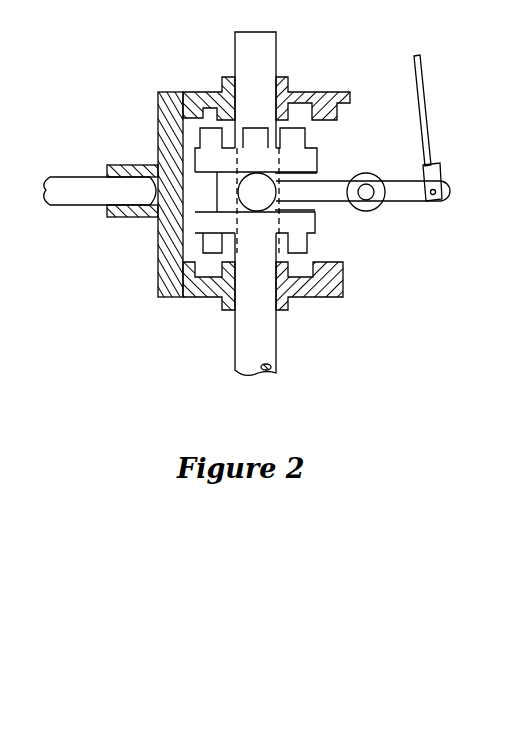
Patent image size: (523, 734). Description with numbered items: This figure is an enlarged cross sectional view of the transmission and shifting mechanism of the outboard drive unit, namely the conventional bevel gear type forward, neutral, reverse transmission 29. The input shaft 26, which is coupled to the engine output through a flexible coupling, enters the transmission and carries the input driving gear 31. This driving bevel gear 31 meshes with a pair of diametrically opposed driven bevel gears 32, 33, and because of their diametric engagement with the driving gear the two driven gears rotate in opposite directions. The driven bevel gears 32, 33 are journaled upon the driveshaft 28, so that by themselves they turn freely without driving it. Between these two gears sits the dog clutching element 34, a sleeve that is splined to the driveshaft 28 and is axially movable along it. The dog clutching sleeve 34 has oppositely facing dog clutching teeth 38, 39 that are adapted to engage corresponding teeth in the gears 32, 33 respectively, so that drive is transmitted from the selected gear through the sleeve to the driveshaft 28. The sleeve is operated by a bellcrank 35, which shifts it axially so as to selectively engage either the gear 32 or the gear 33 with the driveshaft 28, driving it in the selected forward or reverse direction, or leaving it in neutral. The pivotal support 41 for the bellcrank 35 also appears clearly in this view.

The input shaft 26 is at (57, 177).
The driveshaft 28 is at (235, 352).
The forward, neutral, reverse transmission 29 is at (303, 92).
The input driving gear 31 is at (158, 115).
The driven bevel gear 32 is at (197, 93).
The driven bevel gear 33 is at (198, 297).
The dog clutching element 34 is at (322, 158).
The bellcrank 35 is at (410, 192).
The dog clutching teeth 38 is at (213, 138).
The dog clutching teeth 39 is at (210, 237).
The pivotal support 41 is at (364, 200).